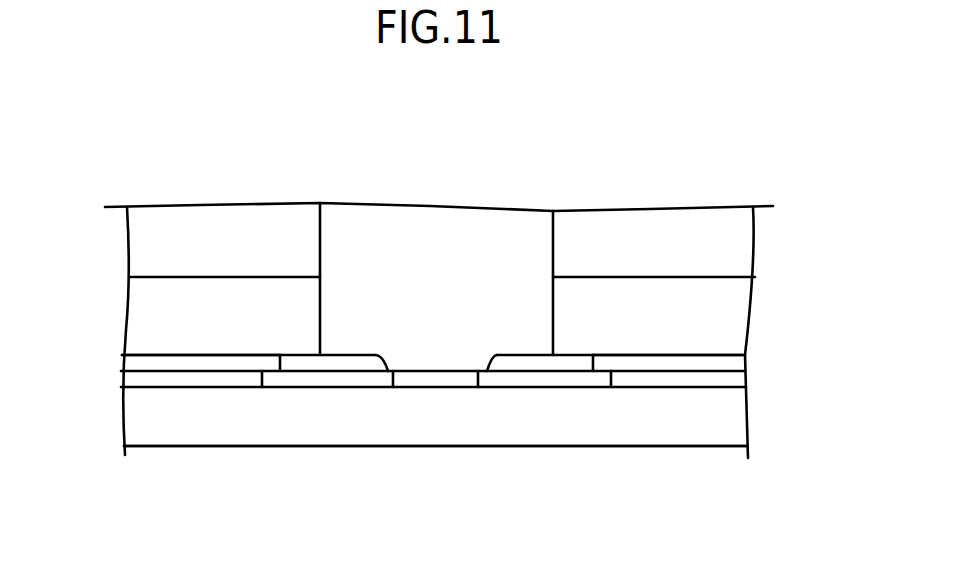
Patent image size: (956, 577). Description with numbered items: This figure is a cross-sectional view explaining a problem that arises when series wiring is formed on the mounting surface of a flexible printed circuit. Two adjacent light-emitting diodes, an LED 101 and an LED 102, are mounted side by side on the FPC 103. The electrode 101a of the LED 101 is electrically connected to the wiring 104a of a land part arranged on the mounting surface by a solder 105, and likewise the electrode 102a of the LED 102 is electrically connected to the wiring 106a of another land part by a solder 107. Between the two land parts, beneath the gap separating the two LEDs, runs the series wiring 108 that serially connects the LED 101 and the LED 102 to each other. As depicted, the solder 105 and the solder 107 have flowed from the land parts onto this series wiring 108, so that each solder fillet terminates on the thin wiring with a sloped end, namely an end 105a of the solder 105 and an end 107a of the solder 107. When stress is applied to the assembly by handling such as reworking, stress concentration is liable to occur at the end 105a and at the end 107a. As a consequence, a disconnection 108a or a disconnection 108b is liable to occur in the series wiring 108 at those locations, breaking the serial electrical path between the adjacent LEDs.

The LED 101 is at (320, 247).
The electrode 101a is at (155, 362).
The LED 102 is at (553, 247).
The electrode 102a is at (718, 362).
The FPC 103 is at (444, 425).
The wiring 104a is at (231, 378).
The solder 105 is at (352, 362).
The end of the solder 105a is at (389, 368).
The wiring 106a is at (643, 378).
The solder 107 is at (522, 362).
The end of the solder 107a is at (486, 368).
The series wiring 108 is at (296, 378).
The disconnection 108a is at (399, 376).
The disconnection 108b is at (477, 376).